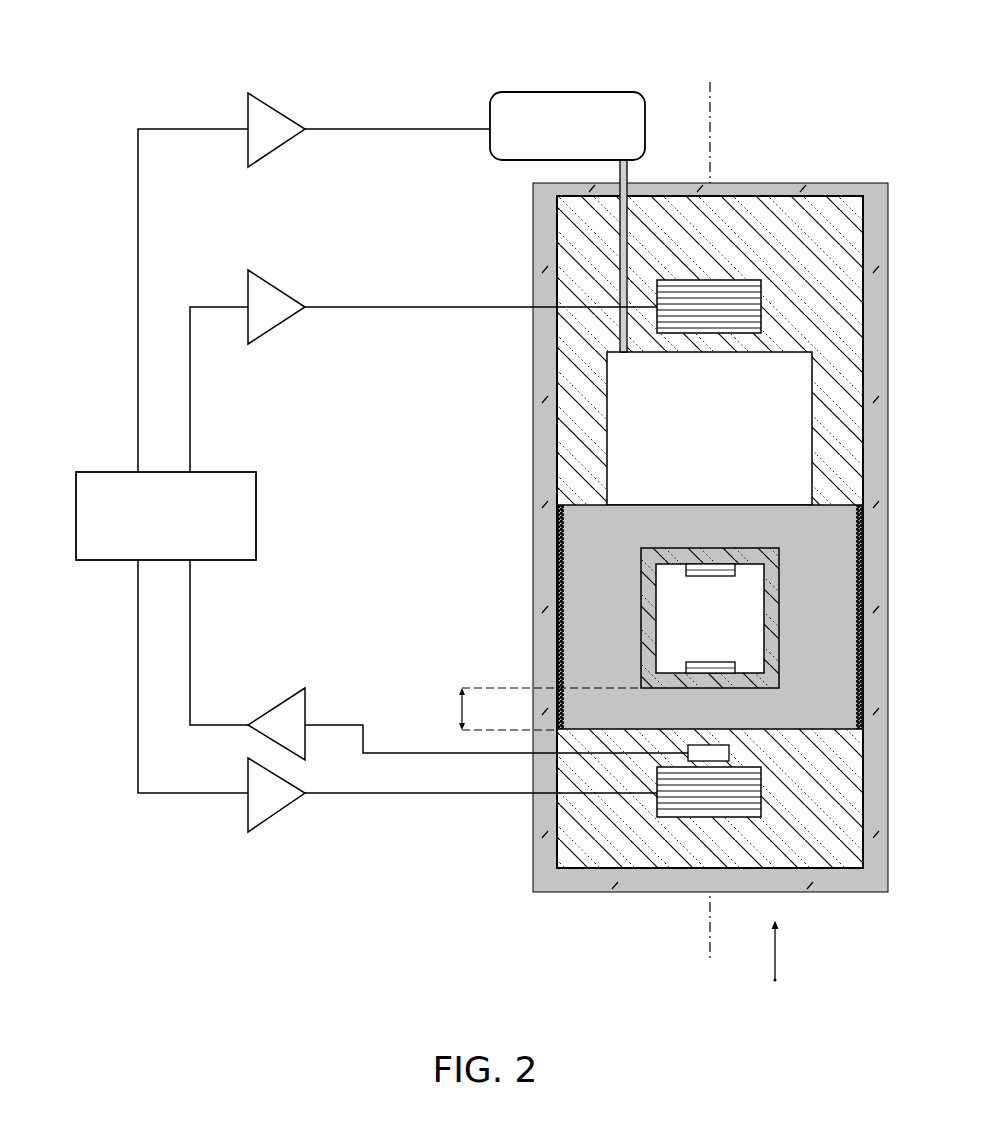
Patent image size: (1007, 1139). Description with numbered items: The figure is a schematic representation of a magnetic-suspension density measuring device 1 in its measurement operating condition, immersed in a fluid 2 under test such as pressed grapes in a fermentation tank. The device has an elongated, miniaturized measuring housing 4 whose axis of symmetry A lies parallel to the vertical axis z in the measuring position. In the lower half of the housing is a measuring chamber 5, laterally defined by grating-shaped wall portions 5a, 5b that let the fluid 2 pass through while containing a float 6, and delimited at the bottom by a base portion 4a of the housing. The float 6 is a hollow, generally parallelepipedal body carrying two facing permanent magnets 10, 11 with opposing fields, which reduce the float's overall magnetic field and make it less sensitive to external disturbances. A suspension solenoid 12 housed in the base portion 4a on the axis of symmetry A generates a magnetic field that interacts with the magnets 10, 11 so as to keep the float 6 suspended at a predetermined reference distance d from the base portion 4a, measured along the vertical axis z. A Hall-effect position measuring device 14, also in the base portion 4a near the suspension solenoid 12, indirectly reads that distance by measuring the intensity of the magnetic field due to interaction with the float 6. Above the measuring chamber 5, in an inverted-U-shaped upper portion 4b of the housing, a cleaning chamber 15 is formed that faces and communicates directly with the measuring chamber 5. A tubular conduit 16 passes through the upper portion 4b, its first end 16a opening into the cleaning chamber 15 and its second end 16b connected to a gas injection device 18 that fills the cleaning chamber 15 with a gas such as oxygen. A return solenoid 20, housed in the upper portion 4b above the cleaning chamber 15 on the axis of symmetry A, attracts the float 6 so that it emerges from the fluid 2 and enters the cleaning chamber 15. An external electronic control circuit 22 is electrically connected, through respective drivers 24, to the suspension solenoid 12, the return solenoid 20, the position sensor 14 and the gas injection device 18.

The density measuring device 1 is at (792, 92).
The fluid 2 is at (884, 806).
The measuring housing 4 is at (867, 216).
The base portion 4a is at (837, 862).
The upper portion 4b is at (568, 373).
The measuring chamber 5 is at (842, 694).
The wall portion 5a is at (566, 556).
The wall portion 5b is at (853, 588).
The float 6 is at (779, 558).
The permanent magnet 10 is at (725, 578).
The permanent magnet 11 is at (695, 660).
The suspension solenoid 12 is at (673, 818).
The position measuring device 14 is at (730, 757).
The cleaning chamber 15 is at (804, 456).
The tubular conduit 16 is at (617, 243).
The first end 16a is at (623, 358).
The second end 16b is at (630, 167).
The gas injection device 18 is at (498, 102).
The return solenoid 20 is at (742, 280).
The electronic control circuit 22 is at (240, 483).
The driver 24 is at (273, 142).
The axis of symmetry A is at (710, 88).
The vertical axis z is at (784, 942).
The reference distance d is at (540, 709).